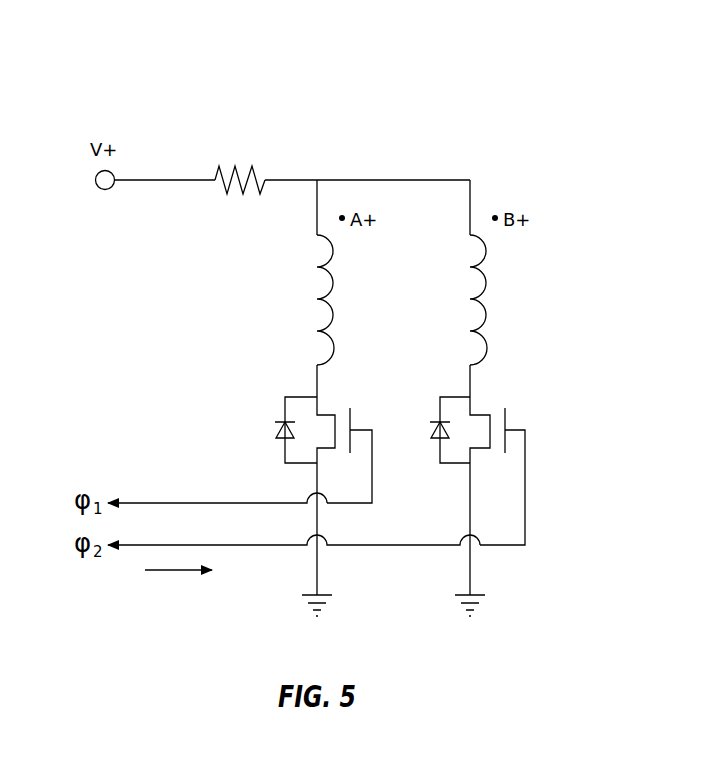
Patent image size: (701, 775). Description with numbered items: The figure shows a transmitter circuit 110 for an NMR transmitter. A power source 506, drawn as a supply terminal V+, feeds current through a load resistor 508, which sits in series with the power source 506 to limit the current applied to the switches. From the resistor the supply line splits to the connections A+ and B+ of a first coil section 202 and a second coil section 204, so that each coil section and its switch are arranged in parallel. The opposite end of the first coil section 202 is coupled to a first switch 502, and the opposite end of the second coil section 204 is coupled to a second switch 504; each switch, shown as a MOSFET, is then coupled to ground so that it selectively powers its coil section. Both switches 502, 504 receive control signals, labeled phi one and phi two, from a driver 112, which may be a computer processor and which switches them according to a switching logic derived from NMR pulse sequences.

The transmitter circuit 110 is at (456, 98).
The power source 506 is at (104, 191).
The load resistor 508 is at (233, 165).
The first coil section 202 is at (333, 316).
The second coil section 204 is at (486, 316).
The first switch 502 is at (343, 409).
The second switch 504 is at (498, 410).
The driver 112 is at (180, 605).